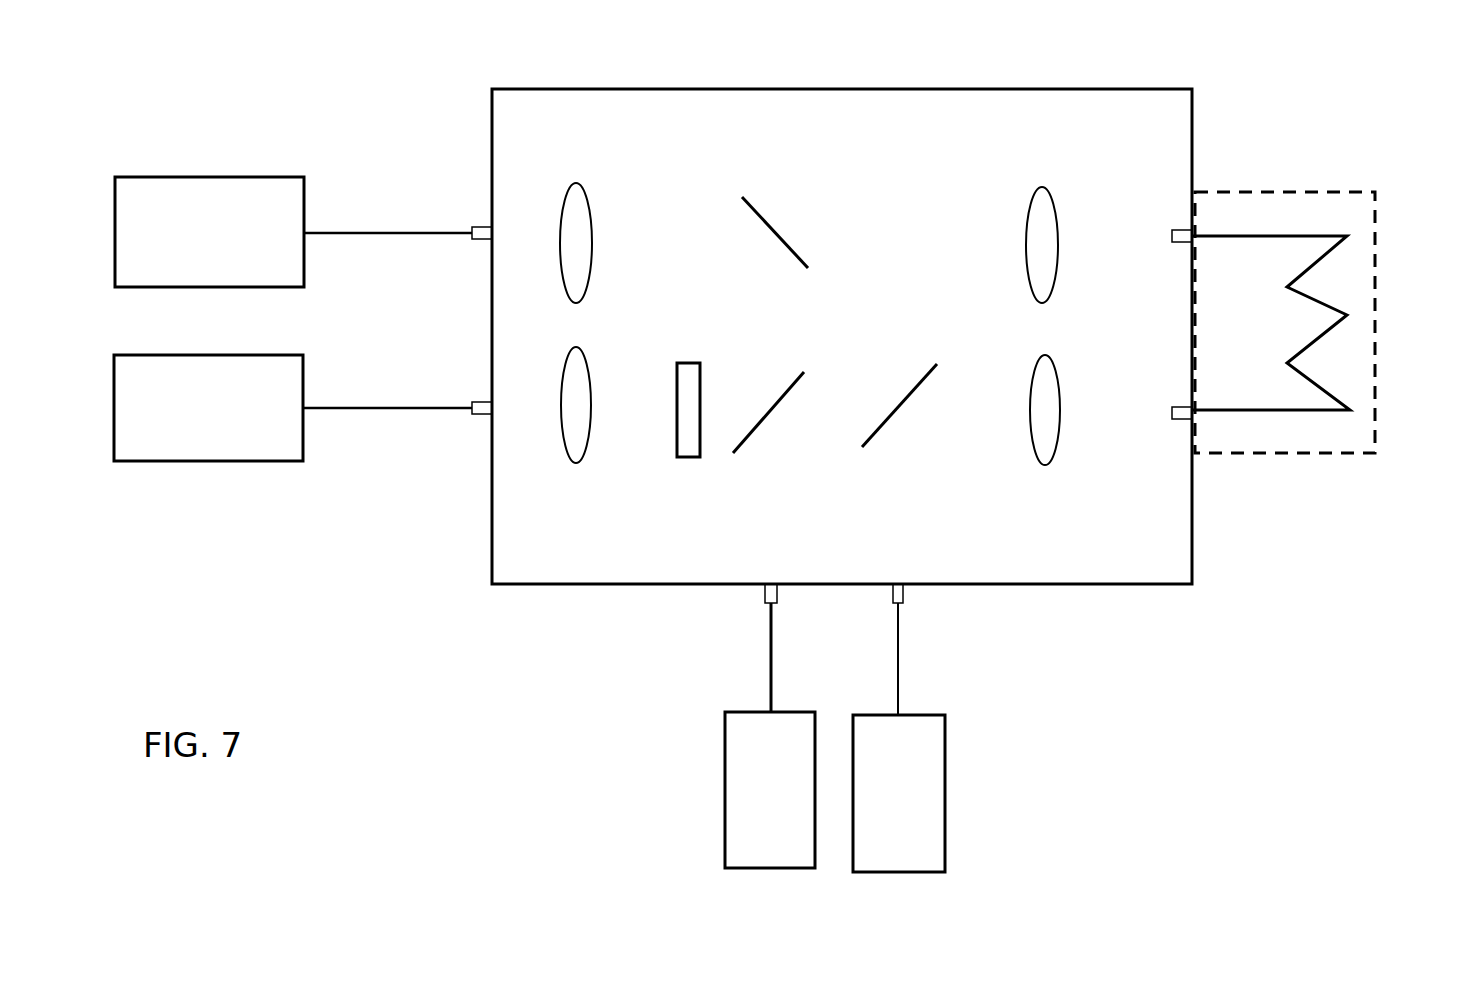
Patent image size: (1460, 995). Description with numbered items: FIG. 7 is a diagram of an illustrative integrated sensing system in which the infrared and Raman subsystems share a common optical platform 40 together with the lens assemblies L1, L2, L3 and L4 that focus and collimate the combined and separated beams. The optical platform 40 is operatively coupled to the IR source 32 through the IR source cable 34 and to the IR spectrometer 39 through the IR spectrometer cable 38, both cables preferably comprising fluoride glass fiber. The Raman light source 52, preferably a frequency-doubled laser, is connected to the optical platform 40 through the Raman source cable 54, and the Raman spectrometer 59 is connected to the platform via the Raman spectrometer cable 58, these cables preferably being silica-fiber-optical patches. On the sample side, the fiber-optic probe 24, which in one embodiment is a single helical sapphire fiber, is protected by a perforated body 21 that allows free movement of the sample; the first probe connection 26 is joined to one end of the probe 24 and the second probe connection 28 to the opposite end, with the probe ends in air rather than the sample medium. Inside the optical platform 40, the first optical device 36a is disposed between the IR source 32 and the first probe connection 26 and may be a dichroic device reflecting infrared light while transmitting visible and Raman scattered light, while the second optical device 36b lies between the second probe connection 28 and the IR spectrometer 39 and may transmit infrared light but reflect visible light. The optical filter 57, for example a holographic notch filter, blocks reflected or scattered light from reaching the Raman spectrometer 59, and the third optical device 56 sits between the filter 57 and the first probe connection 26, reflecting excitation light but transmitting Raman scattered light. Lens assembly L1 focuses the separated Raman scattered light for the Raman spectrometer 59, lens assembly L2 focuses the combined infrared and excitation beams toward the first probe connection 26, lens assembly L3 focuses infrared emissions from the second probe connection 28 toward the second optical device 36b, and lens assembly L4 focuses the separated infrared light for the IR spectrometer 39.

The optical platform 40 is at (813, 89).
The IR spectrometer 39 is at (209, 232).
The Raman spectrometer 59 is at (208, 408).
The IR spectrometer cable 38 is at (362, 230).
The Raman spectrometer cable 58 is at (377, 409).
The lens assembly L4 is at (576, 183).
The lens assembly L1 is at (576, 463).
The lens assembly L3 is at (1042, 187).
The lens assembly L2 is at (1045, 465).
The second optical device 36b is at (758, 208).
The first optical device 36a is at (898, 402).
The third optical device 56 is at (778, 402).
The optical filter 57 is at (684, 363).
The perforated body 21 is at (1352, 185).
The fiber-optic probe 24 is at (1338, 325).
The second probe connection 28 is at (1180, 246).
The first probe connection 26 is at (1180, 420).
The Raman source cable 54 is at (770, 666).
The Raman light source 52 is at (770, 790).
The IR source cable 34 is at (898, 665).
The IR source 32 is at (899, 793).